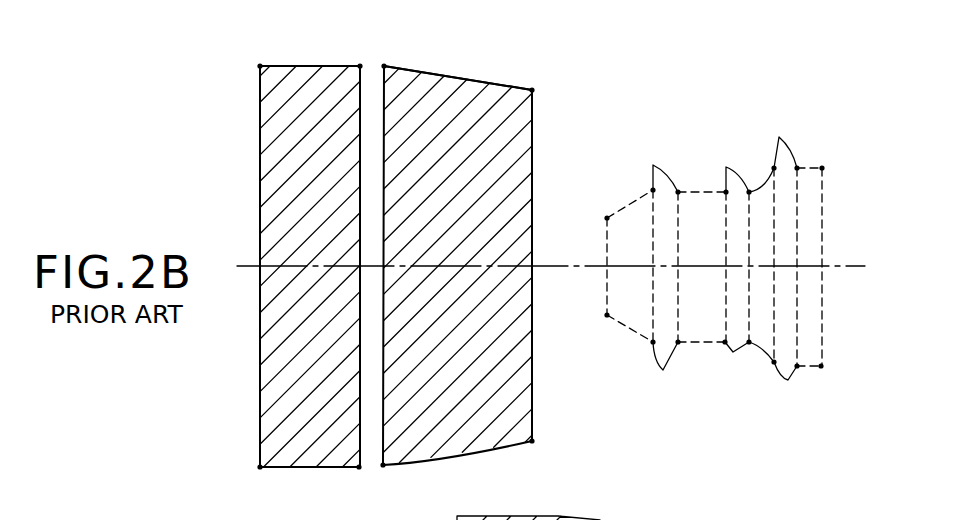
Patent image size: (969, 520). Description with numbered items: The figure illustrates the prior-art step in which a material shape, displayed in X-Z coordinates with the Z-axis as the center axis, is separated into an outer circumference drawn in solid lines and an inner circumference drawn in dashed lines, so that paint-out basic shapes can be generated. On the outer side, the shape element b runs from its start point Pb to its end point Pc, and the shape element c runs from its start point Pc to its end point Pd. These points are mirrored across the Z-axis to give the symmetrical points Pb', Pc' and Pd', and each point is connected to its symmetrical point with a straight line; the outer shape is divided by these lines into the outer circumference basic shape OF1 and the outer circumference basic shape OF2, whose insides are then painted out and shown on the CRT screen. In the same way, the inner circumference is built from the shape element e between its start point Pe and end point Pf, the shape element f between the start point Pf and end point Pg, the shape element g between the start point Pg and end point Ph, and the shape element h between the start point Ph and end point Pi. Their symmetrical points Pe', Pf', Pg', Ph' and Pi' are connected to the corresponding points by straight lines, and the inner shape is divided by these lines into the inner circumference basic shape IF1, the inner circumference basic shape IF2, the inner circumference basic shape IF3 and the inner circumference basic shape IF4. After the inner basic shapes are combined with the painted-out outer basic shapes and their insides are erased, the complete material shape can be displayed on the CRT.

The start point of shape element b Pb is at (230, 45).
The shape element b is at (288, 63).
The outer circumference basic shape OF1 is at (308, 80).
The end point of shape element b and start point of shape element c Pc is at (380, 34).
The shape element c is at (433, 72).
The outer circumference basic shape OF2 is at (468, 90).
The end point of shape element c Pd is at (556, 65).
The symmetrical point of Pb Pb' is at (244, 491).
The symmetrical point of Pc Pc' is at (366, 490).
The symmetrical point of Pd Pd' is at (562, 444).
The shape element h is at (622, 207).
The end point of shape element h Pi is at (583, 260).
The start point of shape element h Ph is at (655, 237).
The shape element g is at (696, 189).
The start point of shape element g Pg is at (724, 235).
The shape element f is at (756, 186).
The start point of shape element f Pf is at (780, 233).
The shape element e is at (808, 165).
The start point of shape element e Pe is at (846, 242).
The symmetrical point of Pi Pi' is at (585, 334).
The inner circumference basic shape IF4 is at (628, 327).
The symmetrical point of Ph Ph' is at (663, 375).
The inner circumference basic shape IF3 is at (702, 342).
The symmetrical point of Pg Pg' is at (736, 362).
The inner circumference basic shape IF2 is at (763, 350).
The symmetrical point of Pf Pf' is at (795, 385).
The inner circumference basic shape IF1 is at (822, 340).
The symmetrical point of Pe Pe' is at (845, 379).